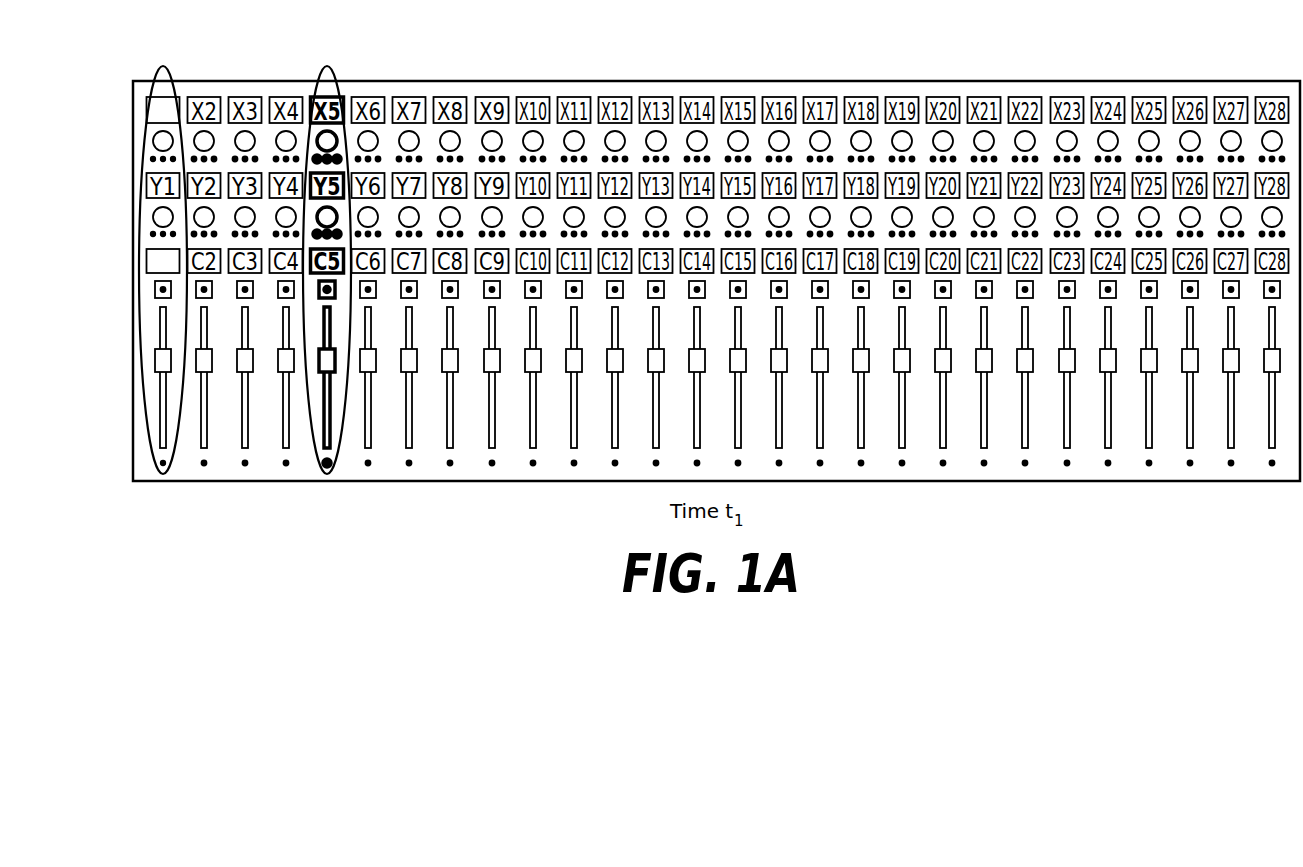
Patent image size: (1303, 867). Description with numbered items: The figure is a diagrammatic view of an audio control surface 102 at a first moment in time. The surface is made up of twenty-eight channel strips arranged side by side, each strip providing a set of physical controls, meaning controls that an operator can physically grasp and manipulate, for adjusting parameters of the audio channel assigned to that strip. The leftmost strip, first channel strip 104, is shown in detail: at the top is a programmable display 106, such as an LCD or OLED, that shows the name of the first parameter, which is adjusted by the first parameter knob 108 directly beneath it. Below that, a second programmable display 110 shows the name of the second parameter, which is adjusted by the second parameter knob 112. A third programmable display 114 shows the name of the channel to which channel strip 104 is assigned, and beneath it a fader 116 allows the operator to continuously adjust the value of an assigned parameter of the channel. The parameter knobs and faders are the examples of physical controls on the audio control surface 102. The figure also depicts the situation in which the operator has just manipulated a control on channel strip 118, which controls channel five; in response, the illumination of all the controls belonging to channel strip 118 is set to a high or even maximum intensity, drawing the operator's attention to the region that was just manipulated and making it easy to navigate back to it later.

The audio control surface 102 is at (535, 80).
The first channel strip 104 is at (168, 72).
The programmable display 106 is at (160, 96).
The first parameter knob 108 is at (157, 134).
The programmable display 110 is at (163, 168).
The second parameter knob 112 is at (157, 207).
The programmable display 114 is at (160, 247).
The fader 116 is at (162, 315).
The channel strip 118 is at (332, 70).